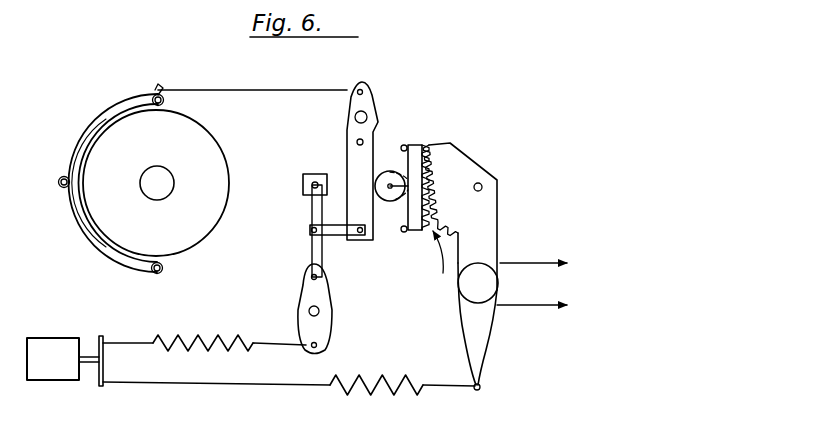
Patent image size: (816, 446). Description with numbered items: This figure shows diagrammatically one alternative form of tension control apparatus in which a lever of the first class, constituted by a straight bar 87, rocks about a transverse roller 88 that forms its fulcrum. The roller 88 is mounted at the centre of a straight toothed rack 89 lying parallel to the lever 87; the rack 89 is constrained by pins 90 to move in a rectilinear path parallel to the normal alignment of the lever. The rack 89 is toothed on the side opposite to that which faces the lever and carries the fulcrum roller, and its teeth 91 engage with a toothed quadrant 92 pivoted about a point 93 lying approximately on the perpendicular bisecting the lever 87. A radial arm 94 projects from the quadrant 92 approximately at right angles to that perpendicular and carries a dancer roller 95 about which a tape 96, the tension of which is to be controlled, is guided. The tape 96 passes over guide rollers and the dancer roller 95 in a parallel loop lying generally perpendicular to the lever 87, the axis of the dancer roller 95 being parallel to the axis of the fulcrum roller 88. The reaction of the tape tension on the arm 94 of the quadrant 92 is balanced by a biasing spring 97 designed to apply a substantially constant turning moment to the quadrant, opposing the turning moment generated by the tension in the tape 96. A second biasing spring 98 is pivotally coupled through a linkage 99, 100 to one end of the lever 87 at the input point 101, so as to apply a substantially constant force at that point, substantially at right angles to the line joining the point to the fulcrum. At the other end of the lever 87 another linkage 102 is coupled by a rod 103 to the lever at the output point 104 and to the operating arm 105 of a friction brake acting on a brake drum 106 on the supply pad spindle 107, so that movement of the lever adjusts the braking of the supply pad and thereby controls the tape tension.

The straight bar 87 is at (371, 152).
The transverse roller 88 is at (380, 178).
The toothed rack 89 is at (448, 149).
The pins 90 is at (406, 147).
The teeth 91 is at (432, 266).
The toothed quadrant 92 is at (448, 173).
The pivot point 93 is at (482, 186).
The radial arm 94 is at (487, 247).
The dancer roller 95 is at (490, 284).
The tape 96 is at (533, 306).
The biasing spring 97 is at (381, 377).
The second biasing spring 98 is at (203, 338).
The linkage 99 is at (312, 219).
The linkage 100 is at (320, 292).
The input point 101 is at (374, 242).
The linkage 102 is at (345, 100).
The rod 103 is at (269, 79).
The output point 104 is at (356, 142).
The operating arm 105 is at (168, 80).
The brake drum 106 is at (212, 148).
The supply pad spindle 107 is at (166, 162).